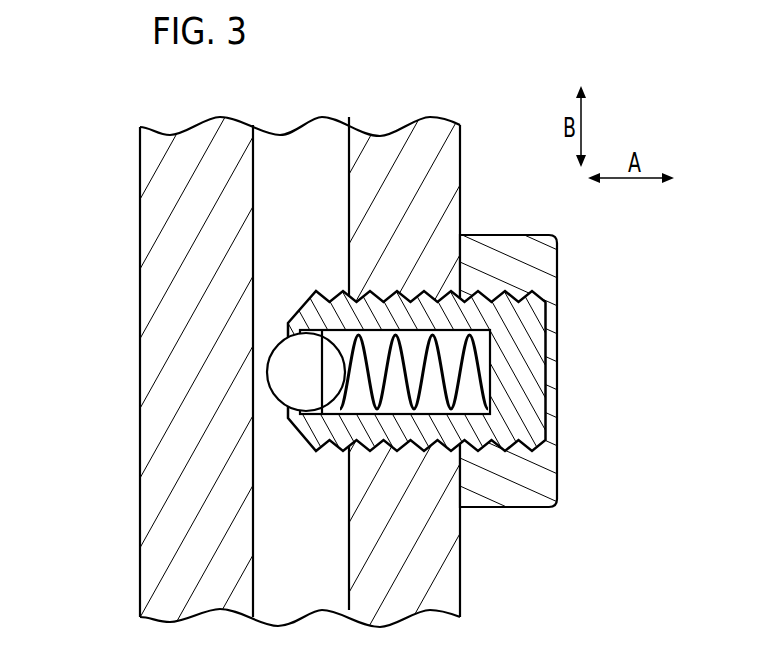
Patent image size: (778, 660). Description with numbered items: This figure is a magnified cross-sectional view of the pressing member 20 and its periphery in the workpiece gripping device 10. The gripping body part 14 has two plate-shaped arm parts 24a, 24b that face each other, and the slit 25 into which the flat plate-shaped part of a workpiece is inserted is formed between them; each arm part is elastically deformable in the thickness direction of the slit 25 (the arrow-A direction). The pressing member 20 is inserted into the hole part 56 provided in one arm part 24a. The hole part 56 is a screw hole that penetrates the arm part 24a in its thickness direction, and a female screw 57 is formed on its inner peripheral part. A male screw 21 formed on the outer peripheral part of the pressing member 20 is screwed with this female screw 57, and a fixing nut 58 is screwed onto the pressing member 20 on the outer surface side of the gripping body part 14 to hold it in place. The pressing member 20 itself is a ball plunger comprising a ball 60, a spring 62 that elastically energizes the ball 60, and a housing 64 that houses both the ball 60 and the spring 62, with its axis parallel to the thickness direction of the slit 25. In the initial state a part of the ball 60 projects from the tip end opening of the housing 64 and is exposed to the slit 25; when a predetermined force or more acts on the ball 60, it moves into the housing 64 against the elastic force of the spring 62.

The workpiece gripping device 10 is at (501, 54).
The gripping body part 14 is at (348, 370).
The arm part 24a is at (440, 190).
The arm part 24b is at (163, 192).
The slit 25 is at (278, 510).
The male screw 21 is at (339, 360).
The hole part 56 is at (342, 303).
The female screw 57 is at (382, 434).
The pressing member 20 is at (375, 382).
The fixing nut 58 is at (545, 259).
The housing 64 is at (537, 325).
The spring 62 is at (483, 377).
The ball 60 is at (281, 357).